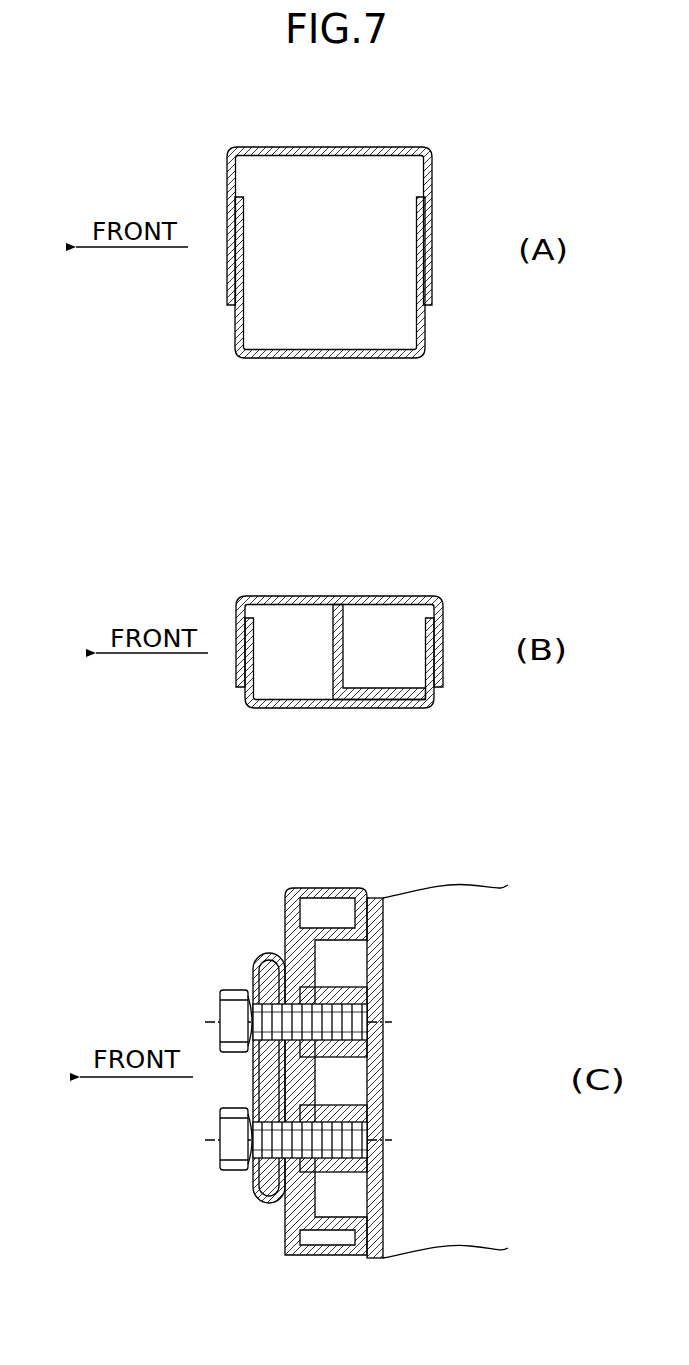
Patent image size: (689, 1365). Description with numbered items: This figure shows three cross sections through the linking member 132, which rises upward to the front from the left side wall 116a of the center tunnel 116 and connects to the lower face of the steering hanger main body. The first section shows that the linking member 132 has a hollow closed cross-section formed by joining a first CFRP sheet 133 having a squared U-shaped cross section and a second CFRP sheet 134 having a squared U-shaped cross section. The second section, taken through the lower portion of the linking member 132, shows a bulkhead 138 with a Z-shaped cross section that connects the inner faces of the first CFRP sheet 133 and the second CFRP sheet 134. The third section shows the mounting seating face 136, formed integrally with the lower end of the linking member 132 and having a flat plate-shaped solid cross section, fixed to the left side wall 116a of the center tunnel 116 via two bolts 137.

The center tunnel 116 is at (394, 1067).
The left side wall of the center tunnel 116a is at (285, 915).
The linking member 132 is at (447, 181).
The first CFRP sheet 133 is at (312, 148).
The second CFRP sheet 134 is at (340, 358).
The mounting seating face 136 is at (252, 1077).
The bolts 137 is at (222, 1013).
The bulkhead 138 is at (332, 647).